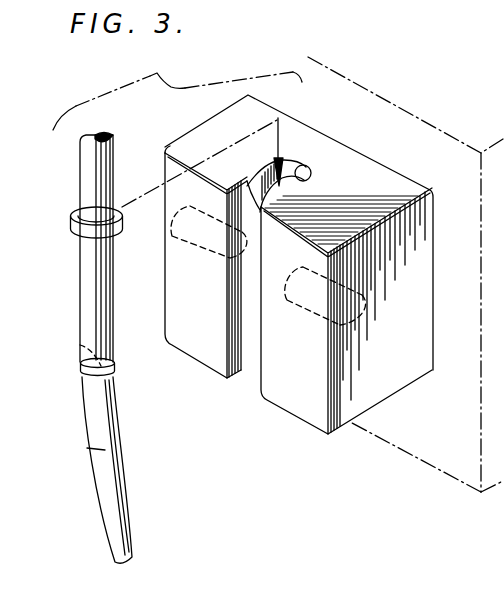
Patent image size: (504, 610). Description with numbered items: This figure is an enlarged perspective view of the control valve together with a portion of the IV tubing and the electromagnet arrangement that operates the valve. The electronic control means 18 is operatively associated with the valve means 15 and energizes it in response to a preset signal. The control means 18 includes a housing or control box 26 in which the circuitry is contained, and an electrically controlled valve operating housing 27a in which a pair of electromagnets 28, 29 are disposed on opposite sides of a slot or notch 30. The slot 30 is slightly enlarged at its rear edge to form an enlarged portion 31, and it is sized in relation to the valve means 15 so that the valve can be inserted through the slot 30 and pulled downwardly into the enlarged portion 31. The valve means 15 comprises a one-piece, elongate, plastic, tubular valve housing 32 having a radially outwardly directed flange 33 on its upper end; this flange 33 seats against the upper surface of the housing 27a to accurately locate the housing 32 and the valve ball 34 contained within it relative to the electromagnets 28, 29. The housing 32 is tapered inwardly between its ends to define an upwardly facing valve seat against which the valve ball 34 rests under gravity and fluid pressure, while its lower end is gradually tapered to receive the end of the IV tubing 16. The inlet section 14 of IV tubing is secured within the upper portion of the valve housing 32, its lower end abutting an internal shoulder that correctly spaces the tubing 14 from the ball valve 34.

The inlet section of IV tubing 14 is at (85, 162).
The valve means 15 is at (66, 293).
The IV tubing 16 is at (97, 493).
The electronic control means 18 is at (396, 86).
The housing or control box 26 is at (423, 462).
The valve operating housing 27a is at (303, 422).
The electromagnet 28 is at (227, 260).
The electromagnet 29 is at (362, 322).
The slot or notch 30 is at (258, 185).
The enlarged portion of the slot 31 is at (311, 166).
The tubular valve housing 32 is at (107, 322).
The radially outwardly directed flange 33 is at (72, 225).
The valve ball 34 is at (80, 337).